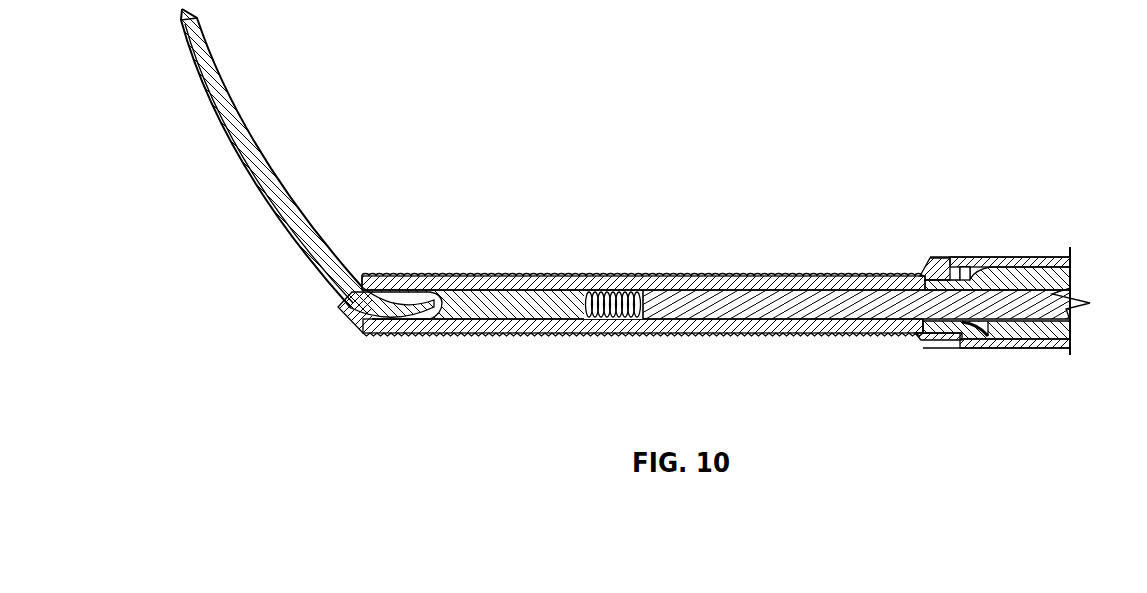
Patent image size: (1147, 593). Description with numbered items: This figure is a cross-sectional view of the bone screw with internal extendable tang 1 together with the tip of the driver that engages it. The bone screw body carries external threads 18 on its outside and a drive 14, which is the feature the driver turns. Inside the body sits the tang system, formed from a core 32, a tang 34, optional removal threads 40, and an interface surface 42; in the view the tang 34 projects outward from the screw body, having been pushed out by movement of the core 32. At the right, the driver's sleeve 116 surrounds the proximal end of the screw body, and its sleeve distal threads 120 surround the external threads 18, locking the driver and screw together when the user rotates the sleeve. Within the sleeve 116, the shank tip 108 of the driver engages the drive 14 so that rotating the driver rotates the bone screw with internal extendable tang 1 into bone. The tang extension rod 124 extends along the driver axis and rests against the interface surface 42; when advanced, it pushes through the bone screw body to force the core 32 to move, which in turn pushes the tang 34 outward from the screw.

The bone screw with internal extendable tang 1 is at (657, 203).
The drive 14 is at (957, 280).
The external threads 18 is at (921, 339).
The core 32 is at (524, 302).
The tang 34 is at (284, 206).
The removal threads 40 is at (605, 314).
The interface surface 42 is at (644, 292).
The shank tip 108 is at (948, 279).
The sleeve 116 is at (1030, 258).
The sleeve distal threads 120 is at (942, 341).
The tang extension rod 124 is at (705, 305).